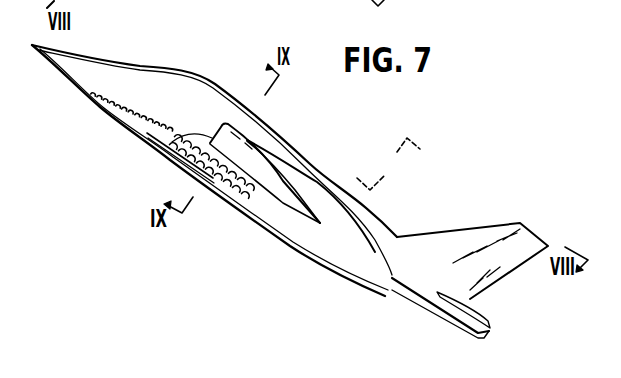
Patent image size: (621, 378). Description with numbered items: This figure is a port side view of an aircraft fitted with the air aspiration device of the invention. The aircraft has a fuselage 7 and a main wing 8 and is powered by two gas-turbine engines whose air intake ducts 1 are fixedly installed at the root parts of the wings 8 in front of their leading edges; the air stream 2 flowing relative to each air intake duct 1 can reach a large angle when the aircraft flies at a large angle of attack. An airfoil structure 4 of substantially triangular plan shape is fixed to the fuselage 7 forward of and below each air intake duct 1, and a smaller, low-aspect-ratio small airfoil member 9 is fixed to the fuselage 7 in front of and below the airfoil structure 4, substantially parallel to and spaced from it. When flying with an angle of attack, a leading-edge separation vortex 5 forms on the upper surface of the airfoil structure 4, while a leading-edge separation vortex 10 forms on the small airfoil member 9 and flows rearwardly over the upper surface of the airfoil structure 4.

The air intake duct 1 is at (230, 124).
The air stream 2 is at (147, 146).
The airfoil structure 4 is at (163, 157).
The leading-edge separation vortex 5 is at (227, 187).
The fuselage 7 is at (411, 277).
The main wing 8 is at (318, 187).
The small airfoil member 9 is at (107, 102).
The leading-edge separation vortex 10 is at (141, 122).